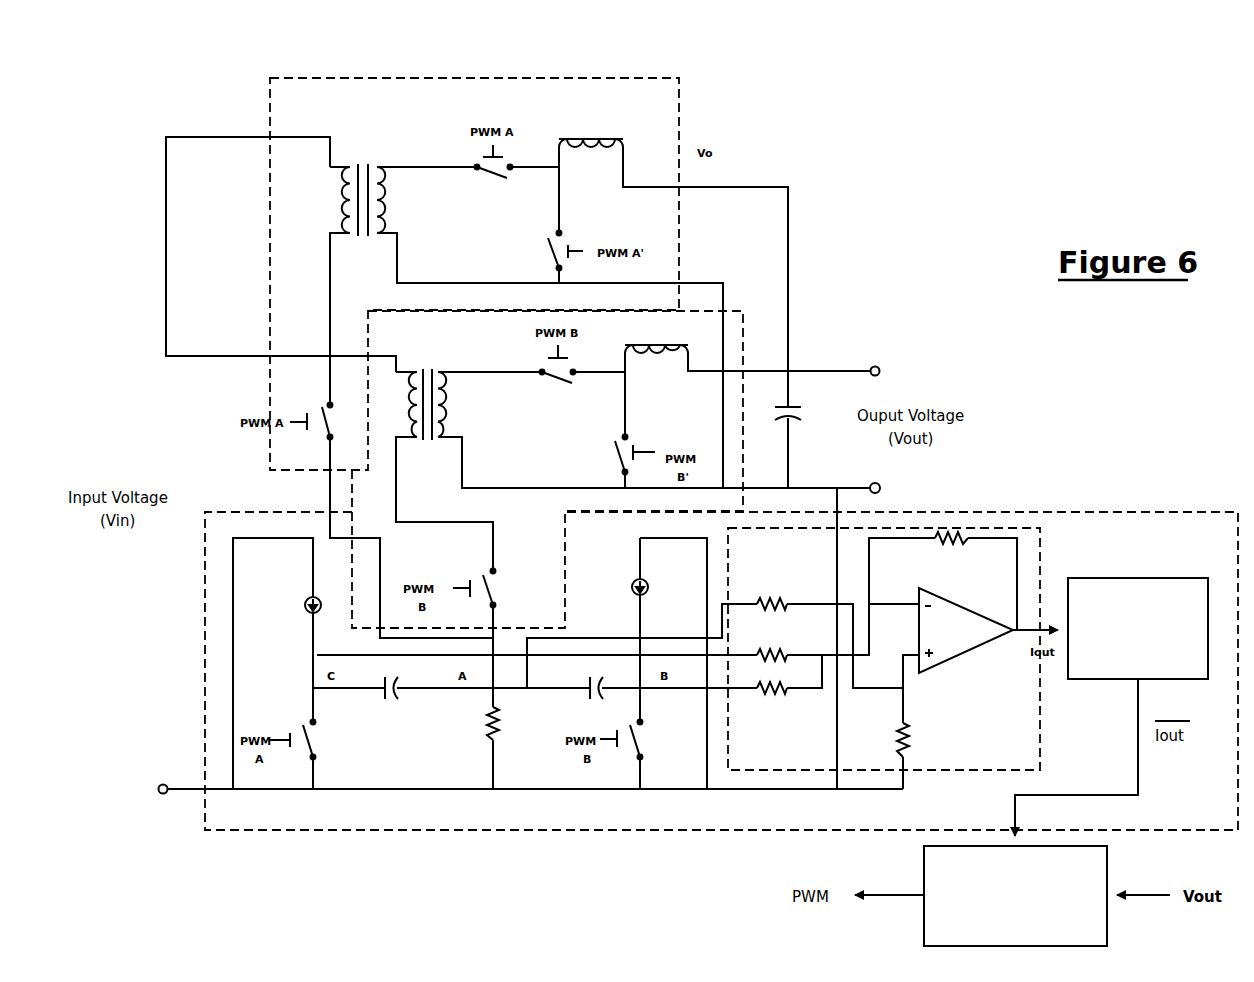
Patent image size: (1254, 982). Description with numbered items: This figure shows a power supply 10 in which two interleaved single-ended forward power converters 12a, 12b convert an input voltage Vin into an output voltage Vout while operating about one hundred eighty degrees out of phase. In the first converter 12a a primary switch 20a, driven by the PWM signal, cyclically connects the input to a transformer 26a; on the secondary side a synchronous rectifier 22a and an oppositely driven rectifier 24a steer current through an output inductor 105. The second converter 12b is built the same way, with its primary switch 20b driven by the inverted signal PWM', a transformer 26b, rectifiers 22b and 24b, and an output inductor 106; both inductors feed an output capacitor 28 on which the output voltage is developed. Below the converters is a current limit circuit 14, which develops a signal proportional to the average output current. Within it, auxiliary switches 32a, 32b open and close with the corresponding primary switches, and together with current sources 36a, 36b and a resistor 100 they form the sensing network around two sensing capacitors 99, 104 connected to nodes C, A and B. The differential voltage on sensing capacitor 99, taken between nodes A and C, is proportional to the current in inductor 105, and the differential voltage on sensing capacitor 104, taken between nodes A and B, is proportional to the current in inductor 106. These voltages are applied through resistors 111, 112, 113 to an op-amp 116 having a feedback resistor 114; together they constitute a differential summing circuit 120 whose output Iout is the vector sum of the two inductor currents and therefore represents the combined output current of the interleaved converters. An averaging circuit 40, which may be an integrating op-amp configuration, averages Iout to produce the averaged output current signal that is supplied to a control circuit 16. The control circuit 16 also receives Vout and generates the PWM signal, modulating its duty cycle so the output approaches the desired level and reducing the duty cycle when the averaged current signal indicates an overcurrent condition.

The power supply 10 is at (962, 139).
The first interleaved power converter 12a is at (632, 74).
The second interleaved power converter 12b is at (743, 309).
The current limit circuit 14 is at (1072, 512).
The control circuit 16 is at (1107, 858).
The primary switch of the first converter 20a is at (335, 418).
The primary switch of the second converter 20b is at (498, 585).
The secondary side switch 22a is at (487, 181).
The secondary side switch 22b is at (552, 388).
The freewheeling switch 24a is at (572, 235).
The freewheeling switch 24b is at (610, 457).
The transformer 26a is at (377, 210).
The transformer 26b is at (442, 395).
The output capacitor 28 is at (797, 418).
The switch 32a is at (318, 738).
The switch 32b is at (645, 747).
The current source 36a is at (305, 597).
The current source 36b is at (632, 582).
The averaging circuit 40 is at (1138, 578).
The sensing capacitor 99 is at (395, 705).
The resistor 100 is at (478, 730).
The sensing capacitor 104 is at (585, 702).
The output inductor 105 is at (610, 138).
The output inductor 106 is at (663, 360).
The resistor 111 is at (768, 597).
The resistor 112 is at (768, 648).
The resistor 113 is at (773, 697).
The resistor 114 is at (945, 532).
The op-amp 116 is at (962, 654).
The differential summing circuit 120 is at (1040, 743).